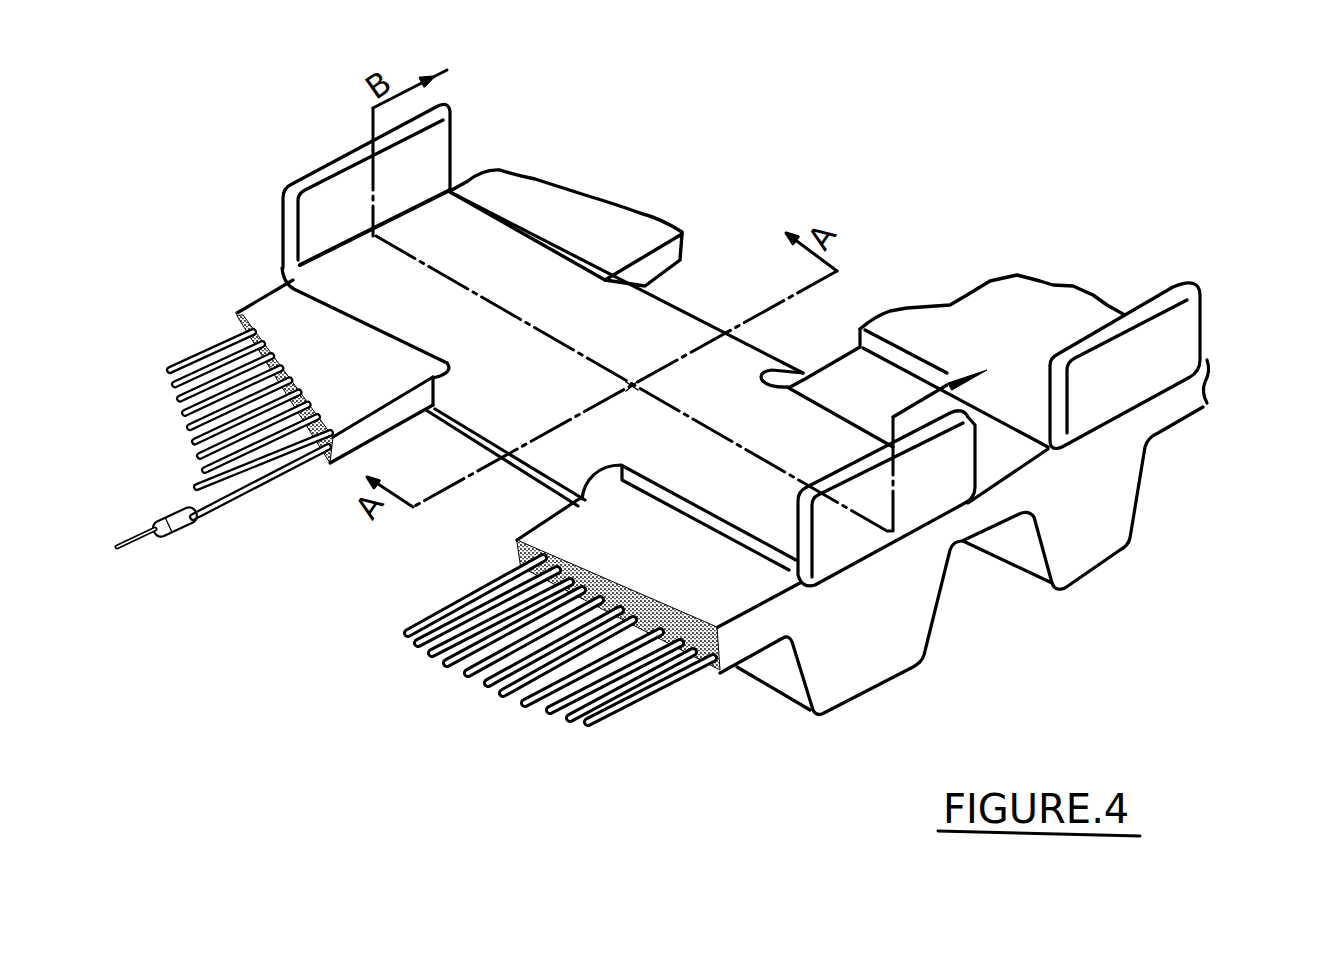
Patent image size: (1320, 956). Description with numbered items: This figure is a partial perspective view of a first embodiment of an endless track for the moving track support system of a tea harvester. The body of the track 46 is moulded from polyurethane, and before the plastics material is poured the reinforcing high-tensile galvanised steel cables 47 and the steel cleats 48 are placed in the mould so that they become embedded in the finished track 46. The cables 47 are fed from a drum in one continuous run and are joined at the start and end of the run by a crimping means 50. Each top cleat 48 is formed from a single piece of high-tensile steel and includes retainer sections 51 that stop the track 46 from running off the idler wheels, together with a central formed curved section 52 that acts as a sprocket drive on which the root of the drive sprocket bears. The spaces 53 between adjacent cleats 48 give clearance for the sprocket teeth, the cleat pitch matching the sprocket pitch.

The polyurethane track 46 is at (1177, 400).
The high-tensile galvanised steel cable 47 is at (198, 467).
The steel cleat 48 is at (509, 242).
The crimping means 50 is at (181, 537).
The retainer section 51 is at (426, 149).
The curved section 52 is at (668, 338).
The space between cleats 53 is at (797, 353).